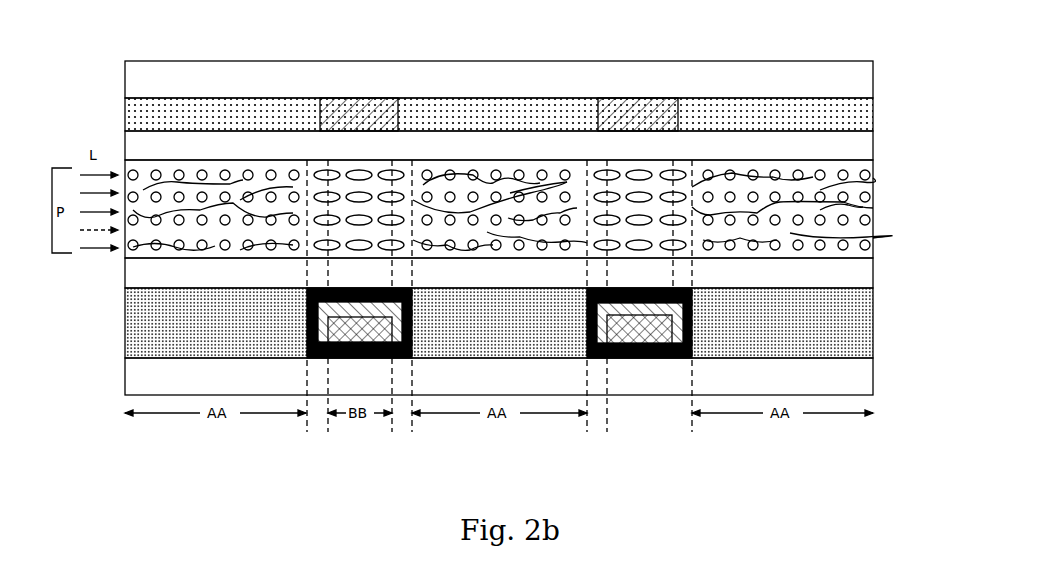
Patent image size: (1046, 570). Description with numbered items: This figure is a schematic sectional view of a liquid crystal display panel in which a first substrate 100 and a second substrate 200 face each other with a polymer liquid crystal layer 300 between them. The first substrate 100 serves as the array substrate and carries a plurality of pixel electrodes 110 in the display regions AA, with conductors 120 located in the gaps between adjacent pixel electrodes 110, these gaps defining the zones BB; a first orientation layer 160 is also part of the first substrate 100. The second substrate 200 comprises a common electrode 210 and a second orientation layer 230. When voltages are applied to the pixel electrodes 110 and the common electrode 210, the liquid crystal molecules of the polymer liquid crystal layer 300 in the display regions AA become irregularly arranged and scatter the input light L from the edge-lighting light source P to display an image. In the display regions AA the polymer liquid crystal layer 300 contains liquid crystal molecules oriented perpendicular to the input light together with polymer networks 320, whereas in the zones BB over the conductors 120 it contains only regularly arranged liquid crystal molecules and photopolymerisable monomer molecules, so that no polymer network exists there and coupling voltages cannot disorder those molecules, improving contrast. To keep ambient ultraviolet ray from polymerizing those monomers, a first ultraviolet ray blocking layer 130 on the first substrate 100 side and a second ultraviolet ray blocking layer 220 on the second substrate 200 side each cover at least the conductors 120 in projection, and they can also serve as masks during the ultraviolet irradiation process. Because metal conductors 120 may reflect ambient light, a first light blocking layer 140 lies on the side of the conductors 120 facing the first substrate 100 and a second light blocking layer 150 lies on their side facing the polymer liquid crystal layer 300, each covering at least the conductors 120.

The first substrate 100 is at (837, 377).
The pixel electrodes 110 is at (855, 350).
The conductors 120 is at (625, 355).
The first ultraviolet ray blocking layer 130 is at (322, 360).
The first light blocking layer 140 is at (403, 358).
The second light blocking layer 150 is at (673, 358).
The first orientation layer 160 is at (837, 272).
The second substrate 200 is at (852, 78).
The common electrode 210 is at (853, 110).
The second ultraviolet ray blocking layer 220 is at (632, 115).
The second orientation layer 230 is at (853, 145).
The polymer liquid crystal layer 300 is at (873, 240).
The polymer networks 320 is at (848, 205).